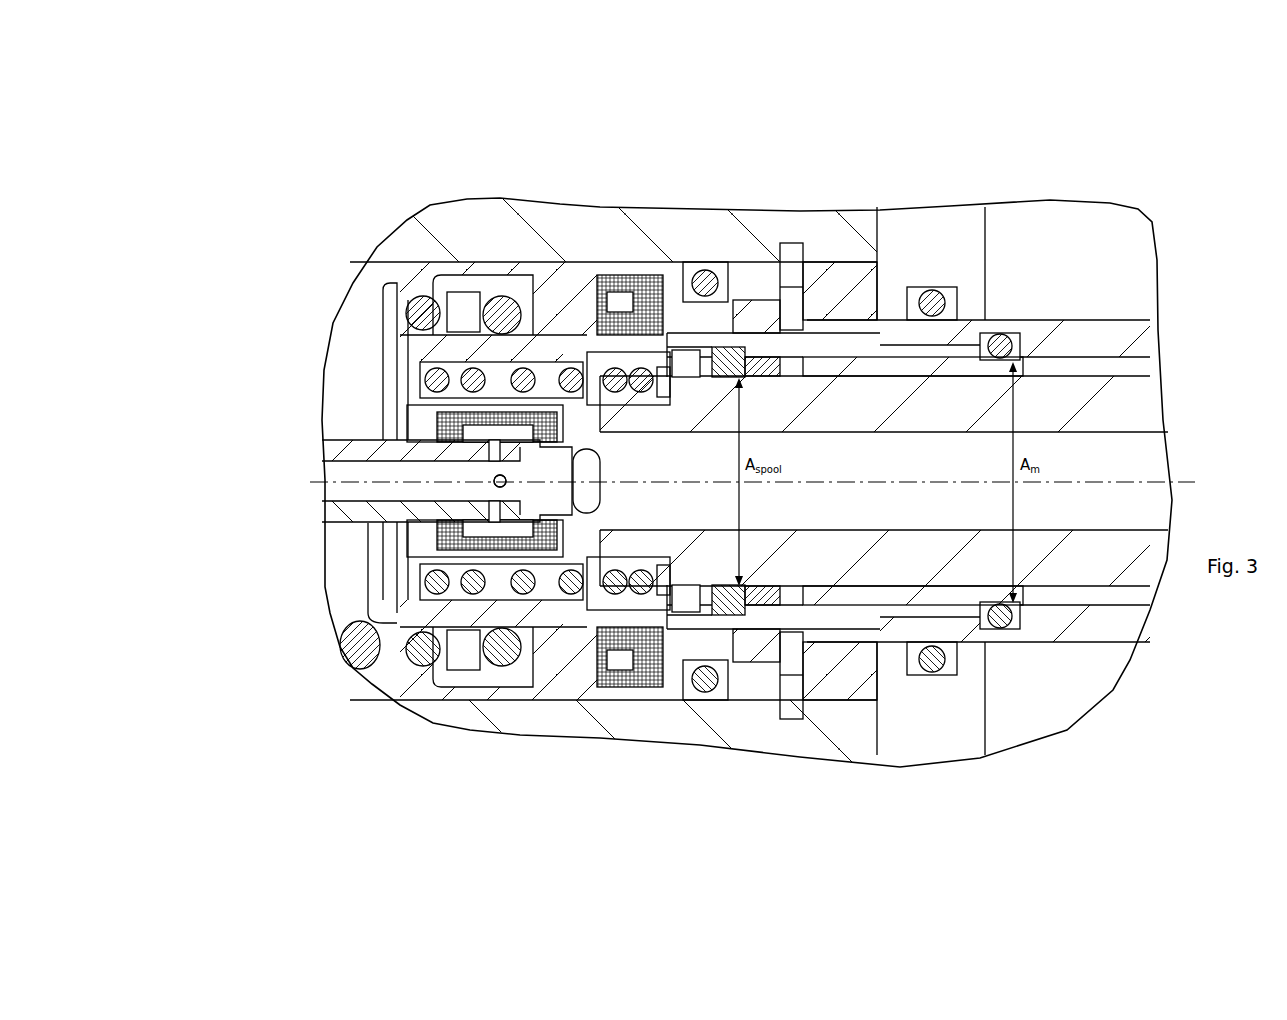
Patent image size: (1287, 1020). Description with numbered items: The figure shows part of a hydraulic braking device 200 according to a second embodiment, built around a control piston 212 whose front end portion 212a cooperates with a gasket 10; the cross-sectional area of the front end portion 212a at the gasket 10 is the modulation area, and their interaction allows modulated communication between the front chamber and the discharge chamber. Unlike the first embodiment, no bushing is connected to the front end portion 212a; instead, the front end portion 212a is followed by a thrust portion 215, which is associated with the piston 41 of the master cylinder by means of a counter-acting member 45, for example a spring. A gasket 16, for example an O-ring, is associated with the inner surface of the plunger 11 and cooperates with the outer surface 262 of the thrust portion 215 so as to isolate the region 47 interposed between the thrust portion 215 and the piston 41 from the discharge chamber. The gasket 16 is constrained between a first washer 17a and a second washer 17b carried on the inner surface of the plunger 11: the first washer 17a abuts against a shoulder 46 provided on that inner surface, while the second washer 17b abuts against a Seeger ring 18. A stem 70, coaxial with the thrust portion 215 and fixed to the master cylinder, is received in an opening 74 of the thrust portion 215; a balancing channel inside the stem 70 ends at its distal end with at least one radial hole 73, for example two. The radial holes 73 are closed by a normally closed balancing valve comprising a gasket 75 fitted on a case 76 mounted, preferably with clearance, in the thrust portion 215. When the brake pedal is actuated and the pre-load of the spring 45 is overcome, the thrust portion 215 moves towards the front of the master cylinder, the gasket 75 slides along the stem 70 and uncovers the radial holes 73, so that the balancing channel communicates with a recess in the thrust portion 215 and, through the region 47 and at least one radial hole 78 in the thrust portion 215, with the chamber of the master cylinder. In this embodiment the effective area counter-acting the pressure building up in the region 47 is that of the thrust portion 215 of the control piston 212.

The braking device 200 is at (268, 218).
The plunger 11 is at (1067, 343).
The gasket 10 is at (1007, 622).
The control piston 212 is at (1122, 442).
The front end portion 212a is at (917, 397).
The outer surface 262 is at (799, 368).
The first washer 17a is at (757, 365).
The second washer 17b is at (703, 365).
The gasket 16 is at (730, 617).
The Seeger ring 18 is at (687, 617).
The thrust portion 215 is at (707, 570).
The counter-acting member 45 is at (640, 640).
The shoulder 46 is at (757, 620).
The piston 41 is at (588, 290).
The region 47 is at (570, 352).
The radial hole 73 is at (503, 457).
The stem 70 is at (344, 430).
The opening 74 is at (412, 540).
The gasket 75 is at (483, 540).
The case 76 is at (517, 550).
The radial hole 78 is at (595, 512).